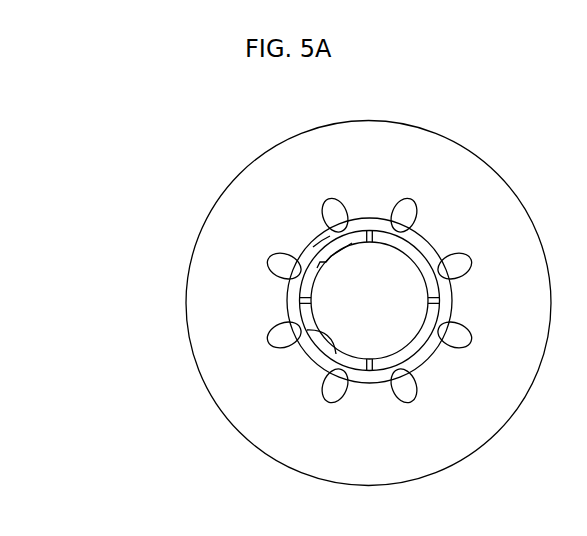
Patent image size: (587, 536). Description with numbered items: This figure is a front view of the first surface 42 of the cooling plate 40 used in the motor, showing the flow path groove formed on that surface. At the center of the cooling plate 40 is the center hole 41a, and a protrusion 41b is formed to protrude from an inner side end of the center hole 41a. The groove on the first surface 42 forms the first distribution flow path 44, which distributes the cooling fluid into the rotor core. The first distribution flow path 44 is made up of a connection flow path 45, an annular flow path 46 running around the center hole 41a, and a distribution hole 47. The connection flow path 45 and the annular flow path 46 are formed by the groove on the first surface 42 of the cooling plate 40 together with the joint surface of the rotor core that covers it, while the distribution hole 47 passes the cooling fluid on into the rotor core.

The cooling plate 40 is at (203, 412).
The center hole 41a is at (306, 331).
The protrusion 41b is at (351, 246).
The first surface 42 is at (215, 327).
The first distribution flow path 44 is at (86, 187).
The connection flow path 45 is at (299, 302).
The annular flow path 46 is at (313, 247).
The distribution hole 47 is at (271, 262).